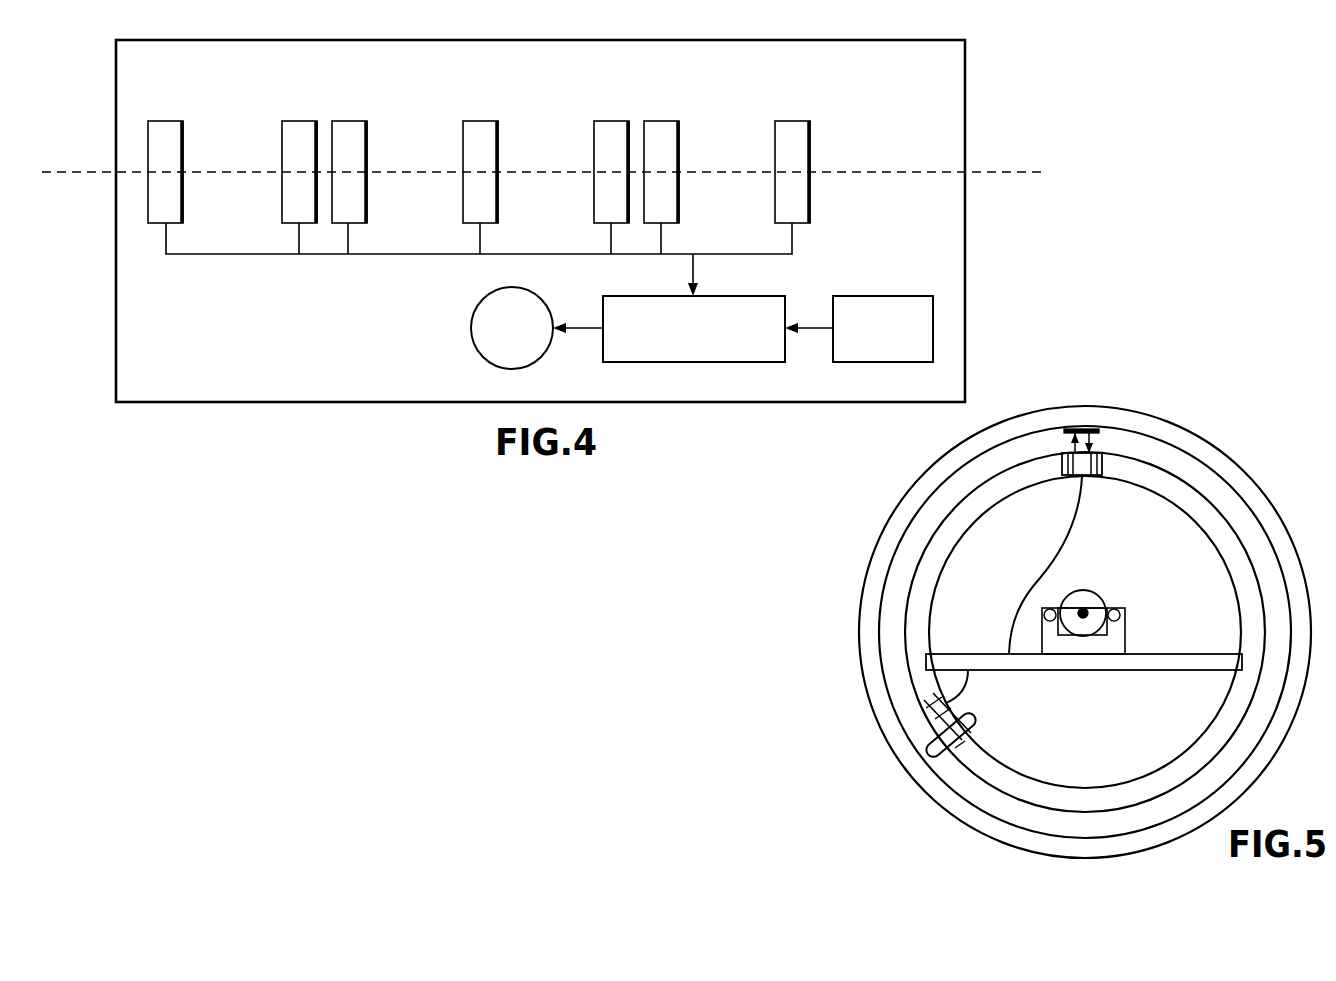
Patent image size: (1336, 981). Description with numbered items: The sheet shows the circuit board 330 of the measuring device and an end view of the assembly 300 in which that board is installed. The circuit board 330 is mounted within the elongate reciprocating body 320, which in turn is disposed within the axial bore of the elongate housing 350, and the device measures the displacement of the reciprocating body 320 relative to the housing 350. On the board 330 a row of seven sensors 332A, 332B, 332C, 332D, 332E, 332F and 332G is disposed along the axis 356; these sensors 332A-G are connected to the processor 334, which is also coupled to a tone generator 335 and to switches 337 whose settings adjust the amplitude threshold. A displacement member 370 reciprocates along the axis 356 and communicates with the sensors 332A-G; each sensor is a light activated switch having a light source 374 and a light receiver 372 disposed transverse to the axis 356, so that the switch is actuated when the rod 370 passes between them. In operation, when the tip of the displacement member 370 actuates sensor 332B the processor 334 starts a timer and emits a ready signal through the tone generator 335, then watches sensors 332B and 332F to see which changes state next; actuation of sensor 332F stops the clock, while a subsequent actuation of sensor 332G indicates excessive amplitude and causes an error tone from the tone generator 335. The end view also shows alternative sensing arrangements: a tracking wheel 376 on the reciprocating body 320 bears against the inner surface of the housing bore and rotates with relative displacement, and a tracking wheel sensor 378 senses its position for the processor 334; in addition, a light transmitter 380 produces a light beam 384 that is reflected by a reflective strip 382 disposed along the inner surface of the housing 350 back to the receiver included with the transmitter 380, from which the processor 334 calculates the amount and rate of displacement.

In FIG. 5, the sensor ring assembly 300 is at (846, 538).
In FIG. 5, the elongate reciprocating body 320 is at (912, 680).
In FIG. 4, the circuit board 330 is at (253, 403).
In FIG. 5, the circuit board 330 is at (1160, 671).
In FIG. 4, the sensor 332A is at (166, 121).
In FIG. 4, the sensor 332B is at (298, 121).
In FIG. 4, the sensor 332C is at (348, 121).
In FIG. 4, the sensor 332D is at (480, 121).
In FIG. 4, the sensor 332E is at (608, 121).
In FIG. 4, the sensor 332F is at (663, 121).
In FIG. 4, the sensor 332G is at (790, 121).
In FIG. 5, the sensors 332A-G is at (1117, 605).
In FIG. 4, the processor 334 is at (670, 352).
In FIG. 4, the tone generator 335 is at (488, 346).
In FIG. 4, the switches 337 is at (859, 346).
In FIG. 5, the elongate housing 350 is at (1270, 502).
In FIG. 4, the axis 356 is at (72, 171).
In FIG. 5, the axis 356 is at (1083, 618).
In FIG. 5, the displacement member 370 is at (1038, 578).
In FIG. 5, the light receiver 372 is at (1043, 615).
In FIG. 5, the light source 374 is at (1121, 616).
In FIG. 5, the tracking wheel 376 is at (980, 717).
In FIG. 5, the tracking wheel sensor 378 is at (928, 753).
In FIG. 5, the light transmitter 380 is at (1086, 478).
In FIG. 5, the reflective strip 382 is at (1080, 428).
In FIG. 5, the light beam 384 is at (1072, 437).